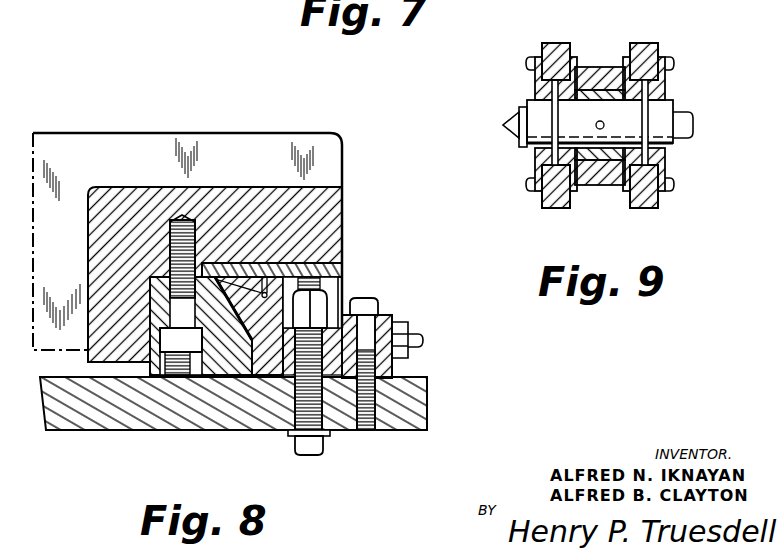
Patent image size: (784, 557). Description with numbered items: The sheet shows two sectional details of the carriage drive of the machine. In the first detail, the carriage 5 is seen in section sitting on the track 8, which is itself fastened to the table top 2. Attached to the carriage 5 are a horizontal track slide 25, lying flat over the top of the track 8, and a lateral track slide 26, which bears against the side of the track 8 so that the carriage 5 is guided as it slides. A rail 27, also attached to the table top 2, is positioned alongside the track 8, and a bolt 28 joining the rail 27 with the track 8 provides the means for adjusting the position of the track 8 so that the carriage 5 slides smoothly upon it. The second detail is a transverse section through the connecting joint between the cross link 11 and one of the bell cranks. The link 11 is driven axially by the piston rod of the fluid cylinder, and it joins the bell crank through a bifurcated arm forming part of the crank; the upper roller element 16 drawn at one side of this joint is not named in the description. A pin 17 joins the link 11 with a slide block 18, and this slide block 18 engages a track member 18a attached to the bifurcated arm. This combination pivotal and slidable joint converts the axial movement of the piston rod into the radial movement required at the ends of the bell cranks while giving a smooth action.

In FIG. 8, the table top 2 is at (107, 412).
In FIG. 8, the carriage 5 is at (333, 195).
In FIG. 8, the track 8 is at (280, 355).
In FIG. 8, the horizontal track slide 25 is at (335, 268).
In FIG. 8, the lateral track slide 26 is at (225, 365).
In FIG. 8, the rail 27 is at (385, 368).
In FIG. 8, the bolt 28 is at (425, 340).
In FIG. 9, the cross link 11 is at (600, 65).
In FIG. 9, the roller 16 is at (553, 43).
In FIG. 9, the pin 17 is at (543, 133).
In FIG. 9, the slide block 18 is at (663, 165).
In FIG. 9, the track member 18a is at (660, 82).